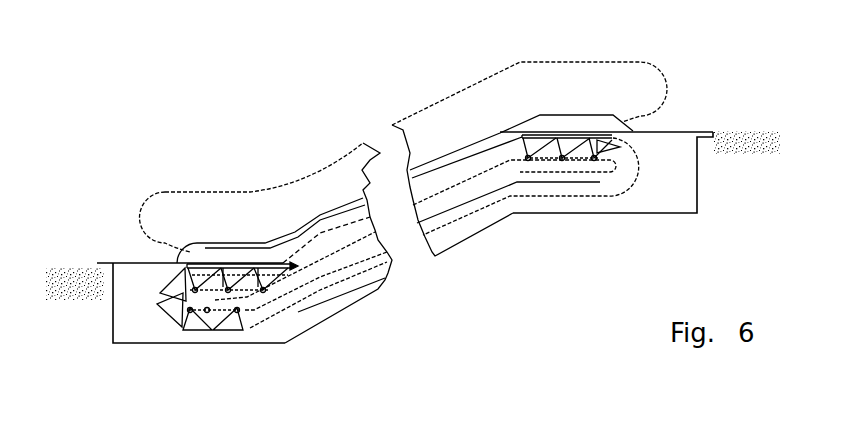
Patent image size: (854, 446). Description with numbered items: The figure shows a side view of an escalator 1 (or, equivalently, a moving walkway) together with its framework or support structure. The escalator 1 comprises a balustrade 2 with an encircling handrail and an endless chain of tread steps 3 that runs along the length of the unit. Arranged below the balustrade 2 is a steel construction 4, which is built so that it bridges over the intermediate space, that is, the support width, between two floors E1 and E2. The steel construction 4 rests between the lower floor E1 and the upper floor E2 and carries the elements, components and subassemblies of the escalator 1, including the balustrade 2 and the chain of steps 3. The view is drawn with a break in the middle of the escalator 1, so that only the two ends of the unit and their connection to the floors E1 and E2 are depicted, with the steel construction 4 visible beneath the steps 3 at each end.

The escalator 1 is at (423, 92).
The balustrade 2 is at (515, 87).
The steps 3 is at (584, 133).
The steel construction 4 is at (193, 344).
The floor E1 is at (62, 267).
The floor E2 is at (745, 127).